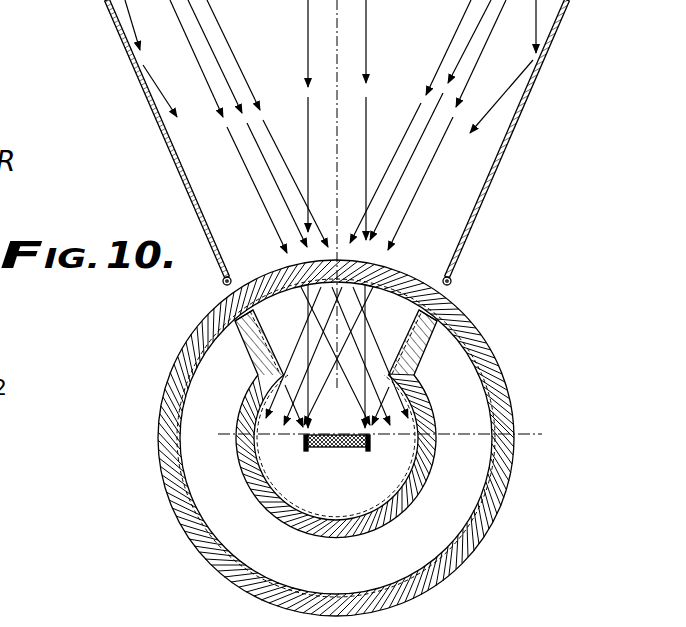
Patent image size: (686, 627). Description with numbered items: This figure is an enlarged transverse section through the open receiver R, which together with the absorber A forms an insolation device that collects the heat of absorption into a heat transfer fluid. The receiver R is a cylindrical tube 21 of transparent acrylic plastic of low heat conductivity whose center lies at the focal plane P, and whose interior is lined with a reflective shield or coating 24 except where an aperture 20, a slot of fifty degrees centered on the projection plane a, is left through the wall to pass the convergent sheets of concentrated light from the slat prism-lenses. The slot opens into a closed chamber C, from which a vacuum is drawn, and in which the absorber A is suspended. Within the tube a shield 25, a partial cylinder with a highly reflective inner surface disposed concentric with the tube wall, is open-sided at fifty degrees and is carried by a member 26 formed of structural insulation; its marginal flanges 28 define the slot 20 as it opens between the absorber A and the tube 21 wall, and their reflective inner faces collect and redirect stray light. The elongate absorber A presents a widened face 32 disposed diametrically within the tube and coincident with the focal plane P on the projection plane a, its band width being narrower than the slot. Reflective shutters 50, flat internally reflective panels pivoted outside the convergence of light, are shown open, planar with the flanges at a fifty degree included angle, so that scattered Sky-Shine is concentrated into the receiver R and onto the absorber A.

The reflective shutters 50 is at (178, 167).
The marginal flanges 28 is at (250, 312).
The aperture 20 is at (345, 356).
The widened face 32 is at (335, 436).
The shield 25 is at (268, 470).
The member 26 is at (307, 527).
The cylindrical tube 21 is at (173, 463).
The reflective shield or coating 24 is at (200, 483).
The projection plane a is at (343, 32).
The receiver R is at (178, 351).
The closed chamber C is at (201, 417).
The focal plane P is at (465, 428).
The absorber A is at (369, 450).